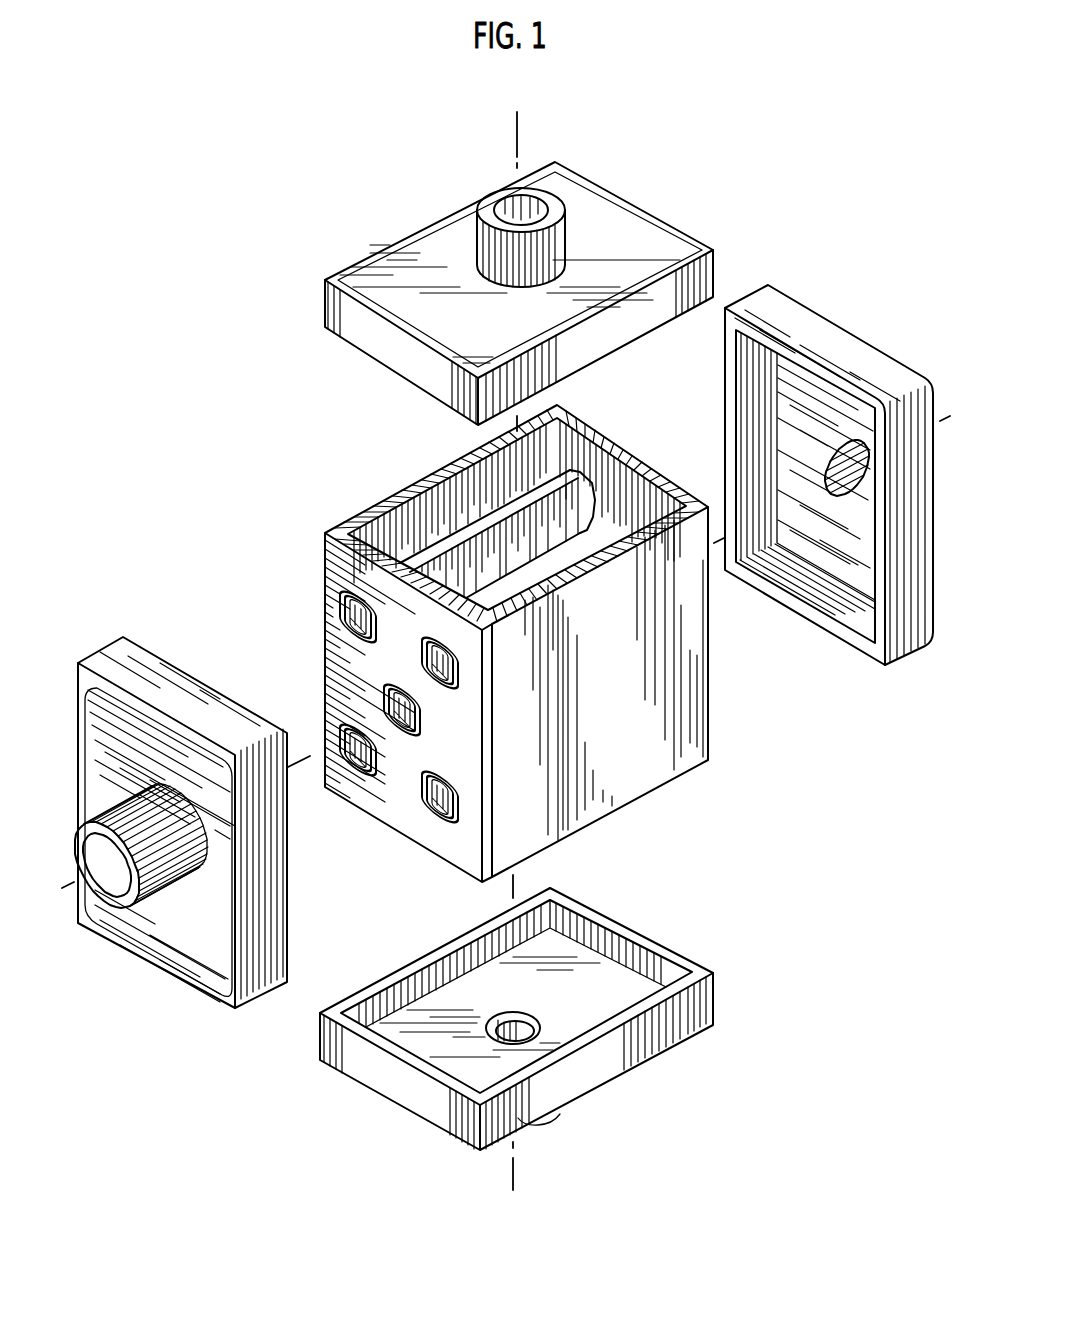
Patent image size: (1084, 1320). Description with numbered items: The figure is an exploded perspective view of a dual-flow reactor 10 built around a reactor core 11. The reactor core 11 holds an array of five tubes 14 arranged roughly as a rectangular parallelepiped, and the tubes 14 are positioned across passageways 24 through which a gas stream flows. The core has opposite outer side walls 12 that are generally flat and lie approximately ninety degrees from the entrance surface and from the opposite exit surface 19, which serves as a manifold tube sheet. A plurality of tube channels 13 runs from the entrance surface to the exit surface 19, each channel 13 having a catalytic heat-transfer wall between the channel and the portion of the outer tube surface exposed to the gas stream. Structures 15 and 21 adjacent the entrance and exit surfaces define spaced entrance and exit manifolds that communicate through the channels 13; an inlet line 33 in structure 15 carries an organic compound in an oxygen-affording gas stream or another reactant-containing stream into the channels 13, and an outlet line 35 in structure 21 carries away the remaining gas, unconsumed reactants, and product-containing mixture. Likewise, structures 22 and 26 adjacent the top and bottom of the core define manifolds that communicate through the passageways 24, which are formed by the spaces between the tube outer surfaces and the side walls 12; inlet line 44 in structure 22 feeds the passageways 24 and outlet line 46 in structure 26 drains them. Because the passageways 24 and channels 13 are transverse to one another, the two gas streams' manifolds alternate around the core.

The dual-flow reactor 10 is at (703, 190).
The reactor core 11 is at (415, 868).
The outer side walls 12 is at (657, 787).
The tube channels 13 is at (392, 698).
The tubes 14 is at (457, 545).
The structure adjacent entrance surface 15 is at (820, 628).
The exit surface manifold tube sheet 19 is at (333, 557).
The structure adjacent exit surface 21 is at (188, 980).
The top structure 22 is at (626, 198).
The passageways 24 is at (598, 535).
The bottom structure 26 is at (571, 1103).
The inlet line 33 is at (848, 443).
The outlet line 35 is at (172, 817).
The inlet line 44 is at (487, 198).
The outlet line 46 is at (533, 1013).